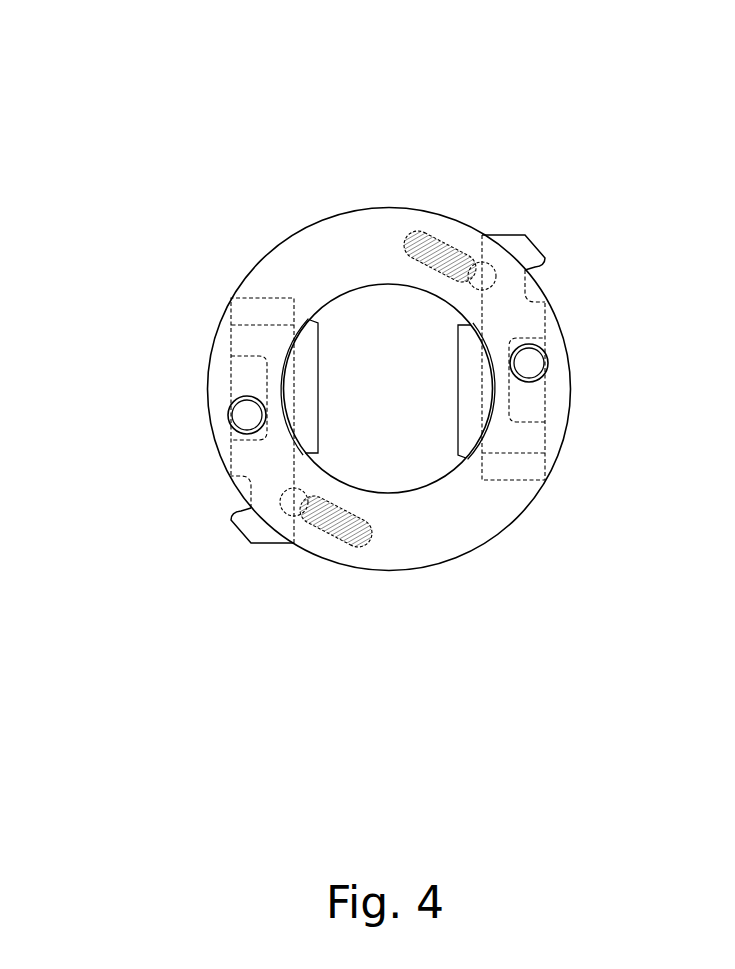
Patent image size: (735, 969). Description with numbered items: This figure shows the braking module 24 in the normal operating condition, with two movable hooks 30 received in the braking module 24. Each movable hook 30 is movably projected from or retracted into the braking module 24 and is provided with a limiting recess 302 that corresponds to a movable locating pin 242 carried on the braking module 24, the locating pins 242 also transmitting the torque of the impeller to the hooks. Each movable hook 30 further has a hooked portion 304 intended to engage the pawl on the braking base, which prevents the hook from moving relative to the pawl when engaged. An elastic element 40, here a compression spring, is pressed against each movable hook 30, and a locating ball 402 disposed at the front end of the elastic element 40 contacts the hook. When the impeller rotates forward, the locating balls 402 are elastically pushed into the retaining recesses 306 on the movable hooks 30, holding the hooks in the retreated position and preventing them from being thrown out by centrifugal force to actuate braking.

The braking module 24 is at (458, 523).
The movable locating pin 242 is at (247, 416).
The movable hook 30 is at (522, 250).
The limiting recess 302 is at (248, 373).
The hooked portion 304 is at (547, 300).
The retaining recess 306 is at (547, 256).
The elastic element 40 is at (440, 236).
The locating ball 402 is at (478, 262).